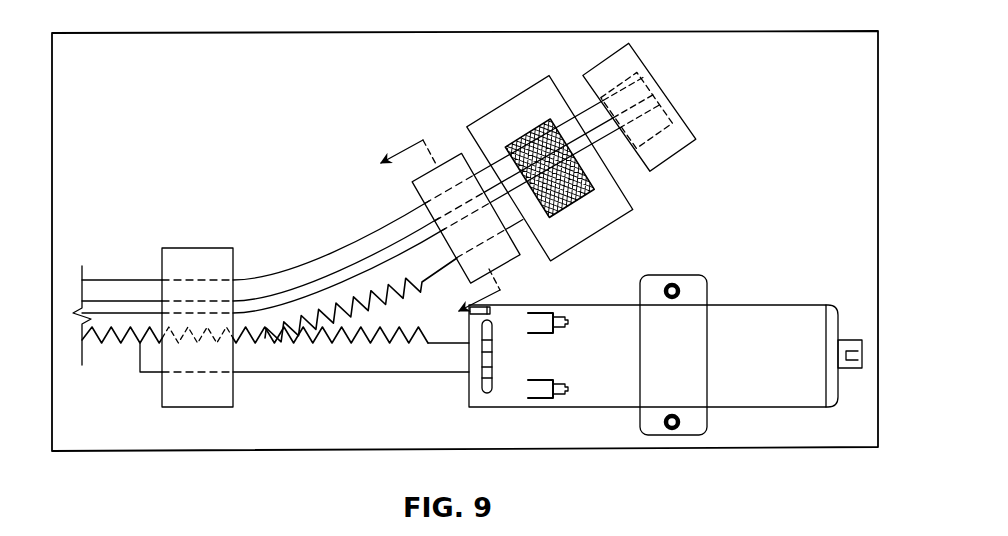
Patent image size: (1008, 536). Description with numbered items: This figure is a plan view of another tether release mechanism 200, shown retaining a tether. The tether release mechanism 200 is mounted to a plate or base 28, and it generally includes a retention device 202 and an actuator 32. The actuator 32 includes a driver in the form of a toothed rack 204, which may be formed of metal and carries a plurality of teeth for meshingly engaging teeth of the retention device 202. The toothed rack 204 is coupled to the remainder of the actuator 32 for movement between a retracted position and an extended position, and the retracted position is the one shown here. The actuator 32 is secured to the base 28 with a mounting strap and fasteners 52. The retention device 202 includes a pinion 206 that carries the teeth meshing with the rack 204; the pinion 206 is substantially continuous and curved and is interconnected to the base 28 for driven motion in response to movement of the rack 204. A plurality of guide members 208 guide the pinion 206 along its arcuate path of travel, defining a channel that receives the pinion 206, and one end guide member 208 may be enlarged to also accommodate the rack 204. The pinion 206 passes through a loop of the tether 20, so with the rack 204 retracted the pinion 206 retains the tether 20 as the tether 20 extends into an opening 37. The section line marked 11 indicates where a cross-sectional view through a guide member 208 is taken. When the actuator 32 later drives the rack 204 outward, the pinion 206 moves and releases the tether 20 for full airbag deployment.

The base 28 is at (810, 46).
The tether release mechanism 200 is at (786, 101).
The retention device 202 is at (305, 255).
The pinion 206 is at (267, 277).
The guide members 208 is at (196, 408).
The opening 37 is at (512, 102).
The tether 20 is at (527, 138).
The section line 11- 11 is at (422, 236).
The toothed rack 204 is at (326, 380).
The actuator 32 is at (774, 408).
The fasteners 52 is at (681, 291).